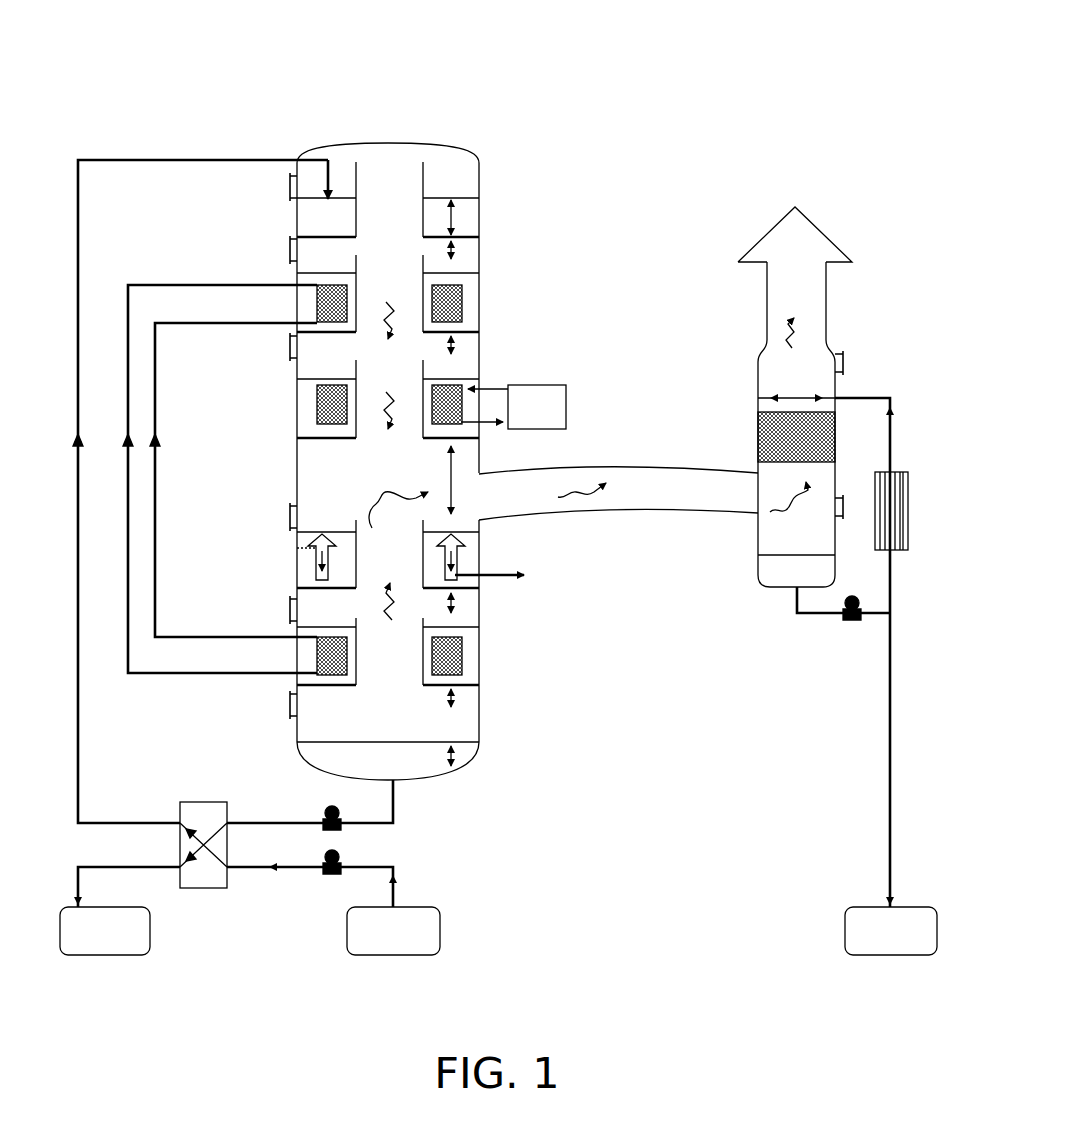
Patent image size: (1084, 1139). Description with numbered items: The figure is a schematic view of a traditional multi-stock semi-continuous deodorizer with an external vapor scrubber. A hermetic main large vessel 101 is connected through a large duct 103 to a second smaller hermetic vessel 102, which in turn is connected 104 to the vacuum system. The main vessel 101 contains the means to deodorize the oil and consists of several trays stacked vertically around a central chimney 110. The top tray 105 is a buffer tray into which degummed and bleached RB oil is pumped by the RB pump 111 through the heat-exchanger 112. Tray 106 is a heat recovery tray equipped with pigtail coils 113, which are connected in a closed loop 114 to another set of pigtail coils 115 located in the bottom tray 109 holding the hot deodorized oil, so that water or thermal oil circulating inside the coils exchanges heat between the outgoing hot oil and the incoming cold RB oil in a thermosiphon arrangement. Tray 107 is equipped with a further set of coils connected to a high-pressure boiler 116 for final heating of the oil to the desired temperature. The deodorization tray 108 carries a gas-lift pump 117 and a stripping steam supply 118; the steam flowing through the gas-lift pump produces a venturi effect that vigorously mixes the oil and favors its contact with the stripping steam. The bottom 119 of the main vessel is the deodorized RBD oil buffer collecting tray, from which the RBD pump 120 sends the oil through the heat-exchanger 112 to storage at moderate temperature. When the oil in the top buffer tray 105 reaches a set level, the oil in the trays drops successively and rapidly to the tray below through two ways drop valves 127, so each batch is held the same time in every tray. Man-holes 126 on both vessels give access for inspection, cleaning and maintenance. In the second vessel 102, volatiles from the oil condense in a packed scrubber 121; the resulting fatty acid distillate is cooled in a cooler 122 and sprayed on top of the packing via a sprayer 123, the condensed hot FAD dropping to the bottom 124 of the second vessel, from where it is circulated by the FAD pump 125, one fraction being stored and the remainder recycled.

The main large vessel 101 is at (470, 153).
The second smaller hermetic vessel 102 is at (757, 340).
The large duct 103 is at (645, 485).
The vacuum connection 104 is at (800, 330).
The top buffer tray 105 is at (478, 213).
The heat recovery tray 106 is at (466, 315).
The final heating tray 107 is at (296, 416).
The deodorization tray 108 is at (472, 562).
The bottom tray 109 is at (466, 655).
The central chimney 110 is at (393, 182).
The RB pump 111 is at (330, 880).
The heat-exchanger 112 is at (203, 892).
The pigtail coils 113 is at (462, 288).
The closed loop 114 is at (183, 315).
The pigtail coils 115 is at (466, 672).
The high-pressure boiler 116 is at (540, 385).
The gas-lift pump 117 is at (318, 550).
The stripping steam supply 118 is at (530, 577).
The bottom buffer collecting tray 119 is at (478, 750).
The RBD pump 120 is at (347, 832).
The packed scrubber 121 is at (765, 420).
The cooler 122 is at (908, 555).
The sprayer 123 is at (788, 395).
The bottom of second vessel 124 is at (770, 582).
The FAD pump 125 is at (848, 625).
The man-holes 126 is at (288, 187).
The two ways drop valves 127 is at (478, 247).